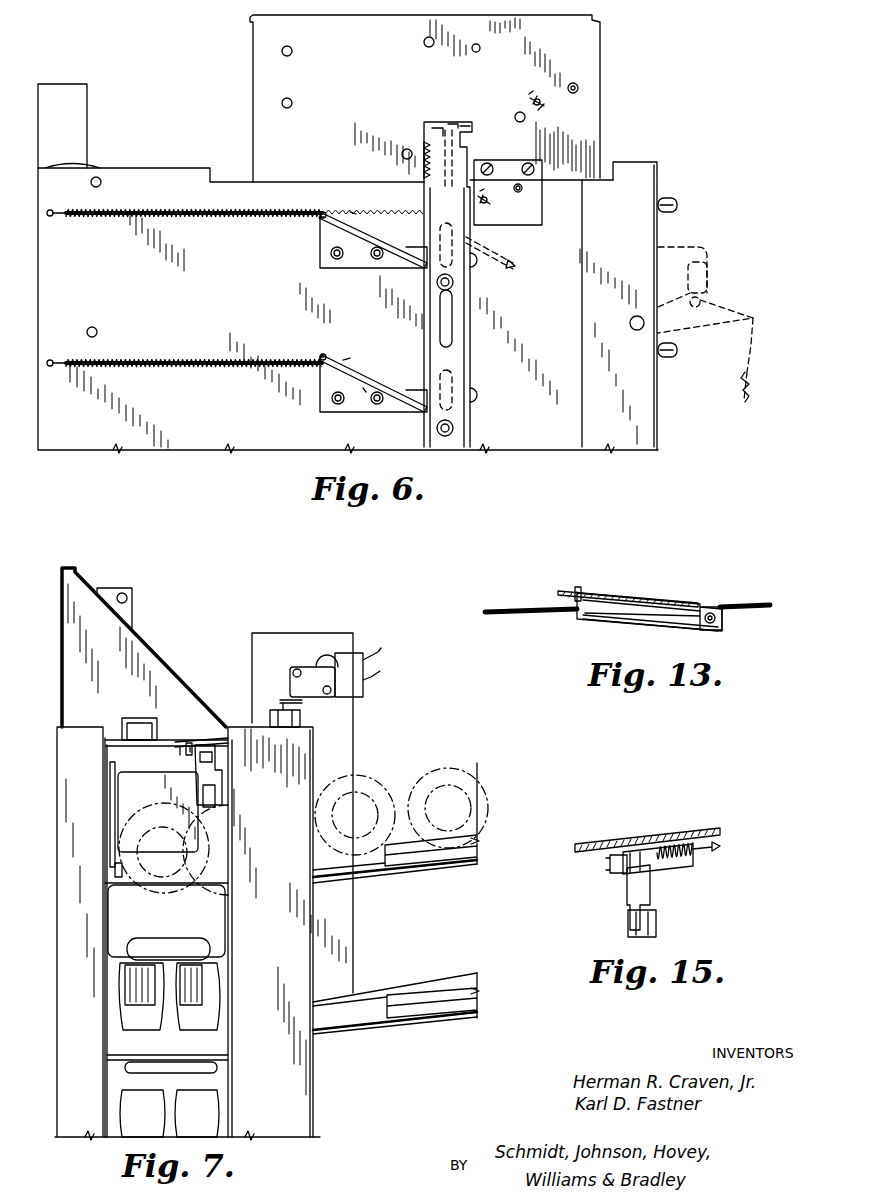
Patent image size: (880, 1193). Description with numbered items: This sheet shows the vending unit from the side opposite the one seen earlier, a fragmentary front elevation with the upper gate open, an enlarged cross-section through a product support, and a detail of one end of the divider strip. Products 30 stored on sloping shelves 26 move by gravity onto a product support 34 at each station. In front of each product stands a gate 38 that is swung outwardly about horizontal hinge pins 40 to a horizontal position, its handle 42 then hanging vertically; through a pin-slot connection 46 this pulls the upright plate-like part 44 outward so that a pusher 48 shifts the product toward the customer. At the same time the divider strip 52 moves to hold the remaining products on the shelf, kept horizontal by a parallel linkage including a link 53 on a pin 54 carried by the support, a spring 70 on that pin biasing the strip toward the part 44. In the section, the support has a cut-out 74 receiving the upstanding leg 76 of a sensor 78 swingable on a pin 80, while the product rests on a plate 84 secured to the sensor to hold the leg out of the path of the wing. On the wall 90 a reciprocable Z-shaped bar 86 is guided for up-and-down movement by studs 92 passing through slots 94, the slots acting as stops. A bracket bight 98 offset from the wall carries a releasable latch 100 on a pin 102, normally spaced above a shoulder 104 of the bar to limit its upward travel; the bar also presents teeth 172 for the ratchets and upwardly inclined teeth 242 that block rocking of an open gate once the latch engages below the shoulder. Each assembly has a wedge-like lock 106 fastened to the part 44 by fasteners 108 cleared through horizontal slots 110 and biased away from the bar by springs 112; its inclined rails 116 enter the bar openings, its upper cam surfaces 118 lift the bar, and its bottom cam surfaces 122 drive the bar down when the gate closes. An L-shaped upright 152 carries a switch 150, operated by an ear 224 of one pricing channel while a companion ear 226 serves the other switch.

In FIG. 7, the shelves 26 is at (430, 866).
In FIG. 7, the products 30 is at (438, 771).
In FIG. 13, the product support 34 is at (531, 616).
In FIG. 15, the product support 34 is at (708, 828).
In FIG. 6, the gate 38 is at (714, 325).
In FIG. 7, the gate 38 is at (218, 1080).
In FIG. 6, the hinge pins 40 is at (633, 330).
In FIG. 6, the handles 42 is at (677, 205).
In FIG. 7, the handles 42 is at (225, 926).
In FIG. 6, the plate-like part 44 is at (413, 387).
In FIG. 7, the plate-like part 44 is at (110, 845).
In FIG. 6, the pin-slot connection 46 is at (708, 272).
In FIG. 7, the pin-slot connection 46 is at (128, 873).
In FIG. 7, the pusher 48 is at (118, 785).
In FIG. 7, the divider strip 52 is at (216, 797).
In FIG. 15, the divider strip 52 is at (658, 925).
In FIG. 7, the link 53 is at (213, 770).
In FIG. 15, the link 53 is at (651, 893).
In FIG. 7, the pin 54 is at (188, 745).
In FIG. 15, the pin 54 is at (617, 873).
In FIG. 7, the spring 70 is at (214, 738).
In FIG. 15, the spring 70 is at (665, 843).
In FIG. 13, the cut-out 74 is at (608, 618).
In FIG. 13, the upstanding leg 76 is at (581, 589).
In FIG. 13, the sensor 78 is at (656, 627).
In FIG. 13, the pin 80 is at (712, 607).
In FIG. 13, the plate 84 is at (560, 592).
In FIG. 6, the reciprocable device (bar) 86 is at (455, 353).
In FIG. 6, the wall 90 is at (155, 450).
In FIG. 6, the studs 92 is at (455, 282).
In FIG. 6, the slots 94 is at (432, 308).
In FIG. 6, the bight 98 is at (253, 90).
In FIG. 7, the bight 98 is at (57, 653).
In FIG. 6, the releasable latch means 100 is at (466, 122).
In FIG. 6, the pin 102 is at (480, 47).
In FIG. 6, the shoulder 104 is at (452, 124).
In FIG. 6, the lock 106 is at (320, 231).
In FIG. 6, the fasteners 108 is at (337, 262).
In FIG. 6, the horizontal slots 110 is at (477, 391).
In FIG. 6, the springs 112 is at (100, 218).
In FIG. 6, the inclined rails or flanges 116 is at (352, 212).
In FIG. 6, the upper cam surfaces 118 is at (369, 228).
In FIG. 6, the bottom cam surfaces 122 is at (363, 391).
In FIG. 7, the switch 150 is at (336, 661).
In FIG. 6, the L-shaped upright 152 is at (87, 128).
In FIG. 7, the L-shaped upright 152 is at (132, 612).
In FIG. 6, the teeth 172 is at (424, 146).
In FIG. 7, the ear 224 is at (300, 706).
In FIG. 7, the ear 226 is at (300, 717).
In FIG. 6, the upwardly inclined teeth 242 is at (478, 163).